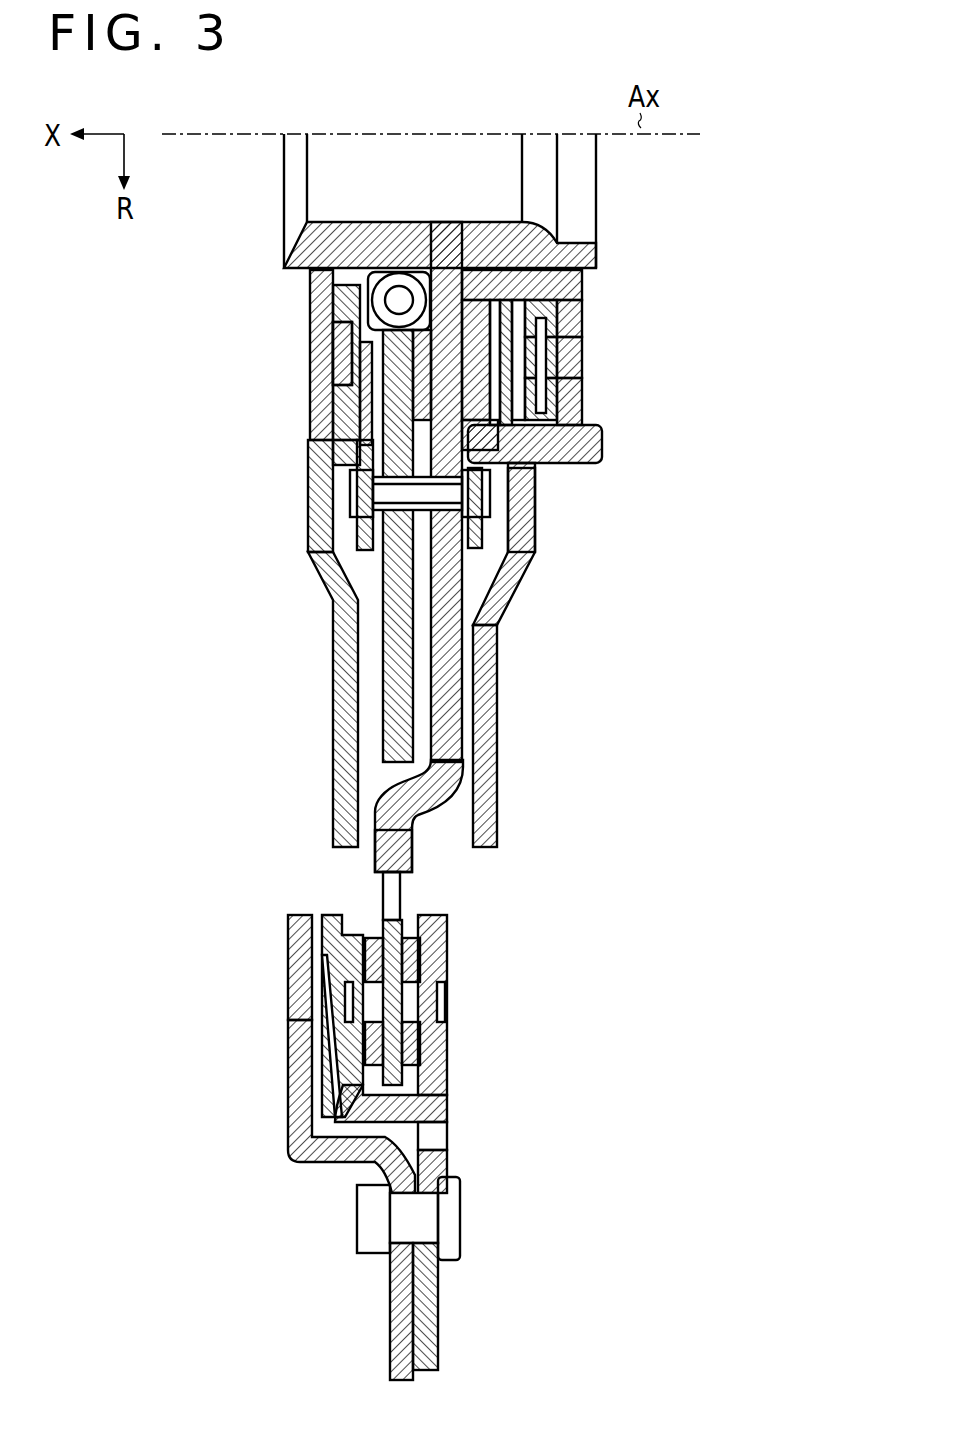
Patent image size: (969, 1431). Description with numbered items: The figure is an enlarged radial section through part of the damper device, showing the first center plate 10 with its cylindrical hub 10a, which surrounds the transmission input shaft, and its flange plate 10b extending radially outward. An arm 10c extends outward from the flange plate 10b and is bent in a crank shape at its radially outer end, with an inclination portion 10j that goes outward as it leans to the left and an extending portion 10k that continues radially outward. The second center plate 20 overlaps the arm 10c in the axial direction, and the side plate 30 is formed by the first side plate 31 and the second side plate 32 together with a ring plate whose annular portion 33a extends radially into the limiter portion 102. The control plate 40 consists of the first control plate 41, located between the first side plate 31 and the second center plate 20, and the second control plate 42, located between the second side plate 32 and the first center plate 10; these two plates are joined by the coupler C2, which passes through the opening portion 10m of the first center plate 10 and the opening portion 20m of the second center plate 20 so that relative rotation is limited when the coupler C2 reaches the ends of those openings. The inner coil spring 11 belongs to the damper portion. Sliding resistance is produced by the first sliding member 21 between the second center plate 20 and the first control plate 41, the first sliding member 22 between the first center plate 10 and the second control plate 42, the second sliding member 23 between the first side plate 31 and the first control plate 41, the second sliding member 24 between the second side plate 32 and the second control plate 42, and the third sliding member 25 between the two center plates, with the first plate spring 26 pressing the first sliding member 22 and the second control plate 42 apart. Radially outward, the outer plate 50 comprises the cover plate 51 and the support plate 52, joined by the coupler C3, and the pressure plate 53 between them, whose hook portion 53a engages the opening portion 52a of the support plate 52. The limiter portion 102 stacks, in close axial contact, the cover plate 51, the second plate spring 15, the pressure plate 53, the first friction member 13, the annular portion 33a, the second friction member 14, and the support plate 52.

The first center plate 10 is at (516, 481).
The hub 10a is at (448, 255).
The flange plate 10b is at (442, 606).
The arm 10c is at (497, 740).
The inclination portion 10j is at (402, 792).
The extending portion 10k is at (375, 857).
The opening portion 10m is at (602, 452).
The inner coil spring 11 is at (310, 301).
The first friction member 13 is at (335, 1075).
The second friction member 14 is at (404, 1083).
The second plate spring 15 is at (300, 930).
The second center plate 20 is at (378, 641).
The opening portion 20m is at (308, 452).
The first sliding member 21 is at (310, 375).
The first sliding member 22 is at (582, 412).
The second sliding member 23 is at (310, 345).
The second sliding member 24 is at (582, 378).
The third sliding member 25 is at (310, 406).
The first plate spring 26 is at (582, 322).
The side plate 30 is at (542, 736).
The first side plate 31 is at (333, 822).
The second side plate 32 is at (542, 736).
The annular portion 33a is at (447, 993).
The control plate 40 is at (532, 556).
The first control plate 41 is at (357, 525).
The second control plate 42 is at (492, 543).
The outer plate 50 is at (445, 1330).
The cover plate 51 is at (300, 1053).
The support plate 52 is at (448, 1040).
The opening portion 52a is at (433, 1138).
The pressure plate 53 is at (353, 953).
The hook portion 53a is at (447, 1110).
The limiter portion 102 is at (355, 1054).
The coupler C2 is at (465, 493).
The coupler C3 is at (405, 1218).